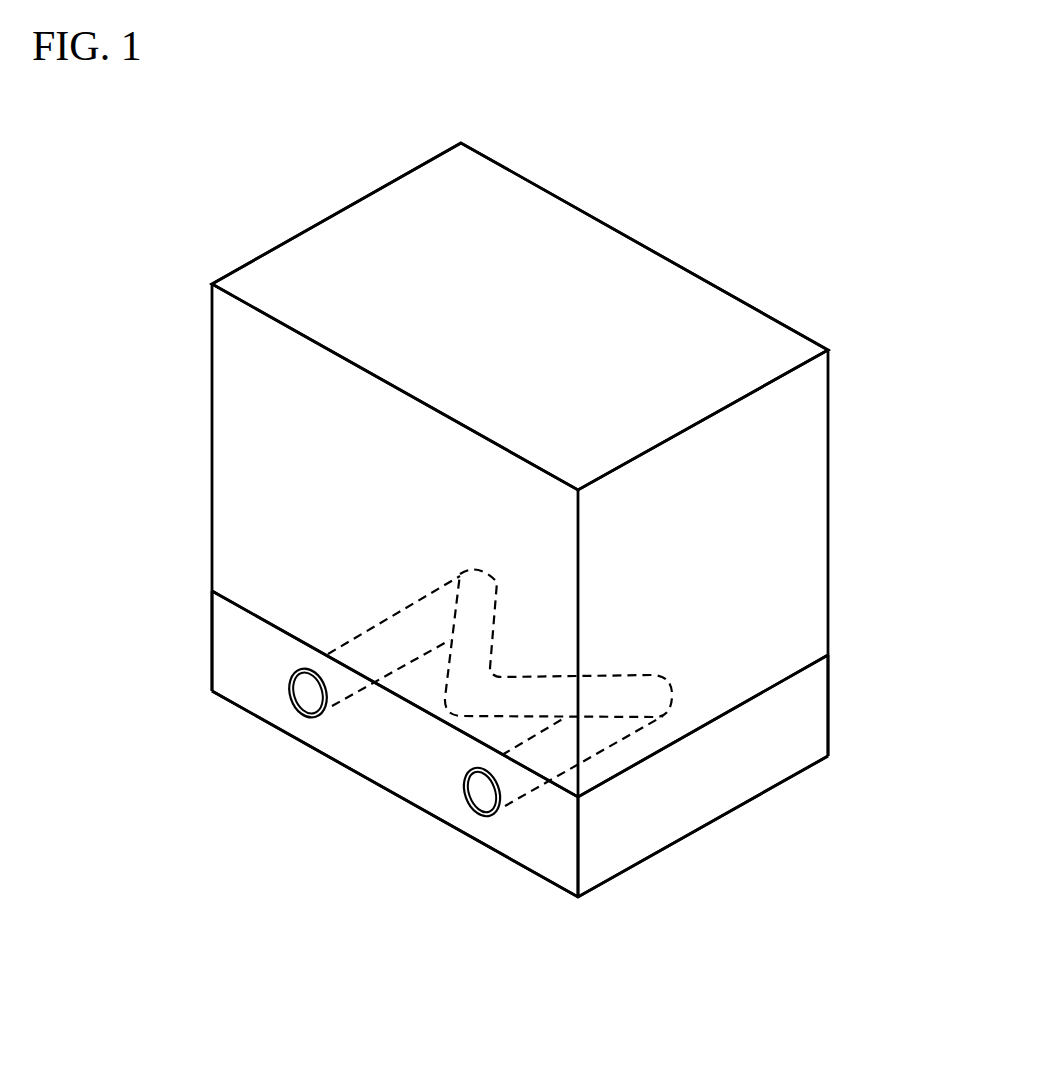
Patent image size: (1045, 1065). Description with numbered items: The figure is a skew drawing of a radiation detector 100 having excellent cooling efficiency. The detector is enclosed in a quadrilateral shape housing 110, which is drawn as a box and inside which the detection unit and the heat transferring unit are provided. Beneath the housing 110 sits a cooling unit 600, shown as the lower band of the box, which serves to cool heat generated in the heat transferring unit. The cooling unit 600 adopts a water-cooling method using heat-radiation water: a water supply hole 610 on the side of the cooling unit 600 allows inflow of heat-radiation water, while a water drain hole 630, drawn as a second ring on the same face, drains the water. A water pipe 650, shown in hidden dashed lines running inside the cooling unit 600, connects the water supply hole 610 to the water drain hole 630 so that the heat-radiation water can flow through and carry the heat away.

The radiation detector 100 is at (614, 180).
The housing 110 is at (393, 207).
The cooling unit 600 is at (645, 800).
The water supply hole 610 is at (308, 693).
The water drain hole 630 is at (484, 797).
The water pipe 650 is at (465, 698).